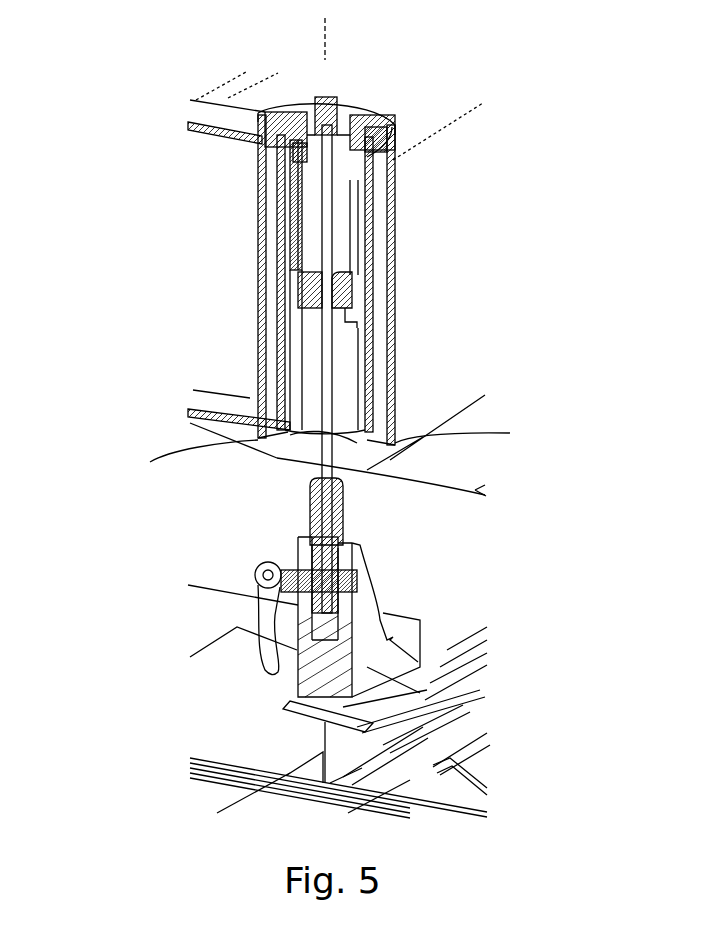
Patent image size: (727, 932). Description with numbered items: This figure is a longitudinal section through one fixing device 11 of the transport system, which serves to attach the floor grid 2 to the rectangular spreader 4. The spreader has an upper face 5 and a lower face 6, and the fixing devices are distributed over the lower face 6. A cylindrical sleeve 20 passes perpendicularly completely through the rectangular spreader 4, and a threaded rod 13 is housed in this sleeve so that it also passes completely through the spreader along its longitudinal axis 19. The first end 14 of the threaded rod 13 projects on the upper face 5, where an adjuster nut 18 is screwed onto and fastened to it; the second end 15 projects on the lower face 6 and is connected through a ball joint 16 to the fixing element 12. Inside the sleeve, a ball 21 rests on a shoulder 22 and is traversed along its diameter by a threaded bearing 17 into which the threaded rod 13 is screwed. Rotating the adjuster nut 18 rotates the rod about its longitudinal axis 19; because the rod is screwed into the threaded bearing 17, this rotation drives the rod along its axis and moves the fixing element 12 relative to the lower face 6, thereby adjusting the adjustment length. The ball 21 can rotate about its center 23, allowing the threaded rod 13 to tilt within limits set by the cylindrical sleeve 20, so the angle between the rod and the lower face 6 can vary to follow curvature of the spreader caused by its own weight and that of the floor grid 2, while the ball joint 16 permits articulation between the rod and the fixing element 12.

The floor grid 2 is at (383, 745).
The rectangular spreader 4 is at (440, 178).
The upper face 5 is at (419, 108).
The lower face 6 is at (428, 443).
The fixing device 11 is at (243, 440).
The fixing element 12 is at (367, 665).
The threaded rod 13 is at (332, 370).
The first end 14 is at (296, 142).
The second end 15 is at (268, 510).
The ball joint 16 is at (340, 567).
The threaded bearing 17 is at (338, 297).
The adjuster nut 18 is at (331, 95).
The longitudinal axis 19 is at (324, 57).
The cylindrical sleeve 20 is at (282, 215).
The ball 21 is at (298, 283).
The shoulder 22 is at (316, 306).
The center 23 is at (330, 282).